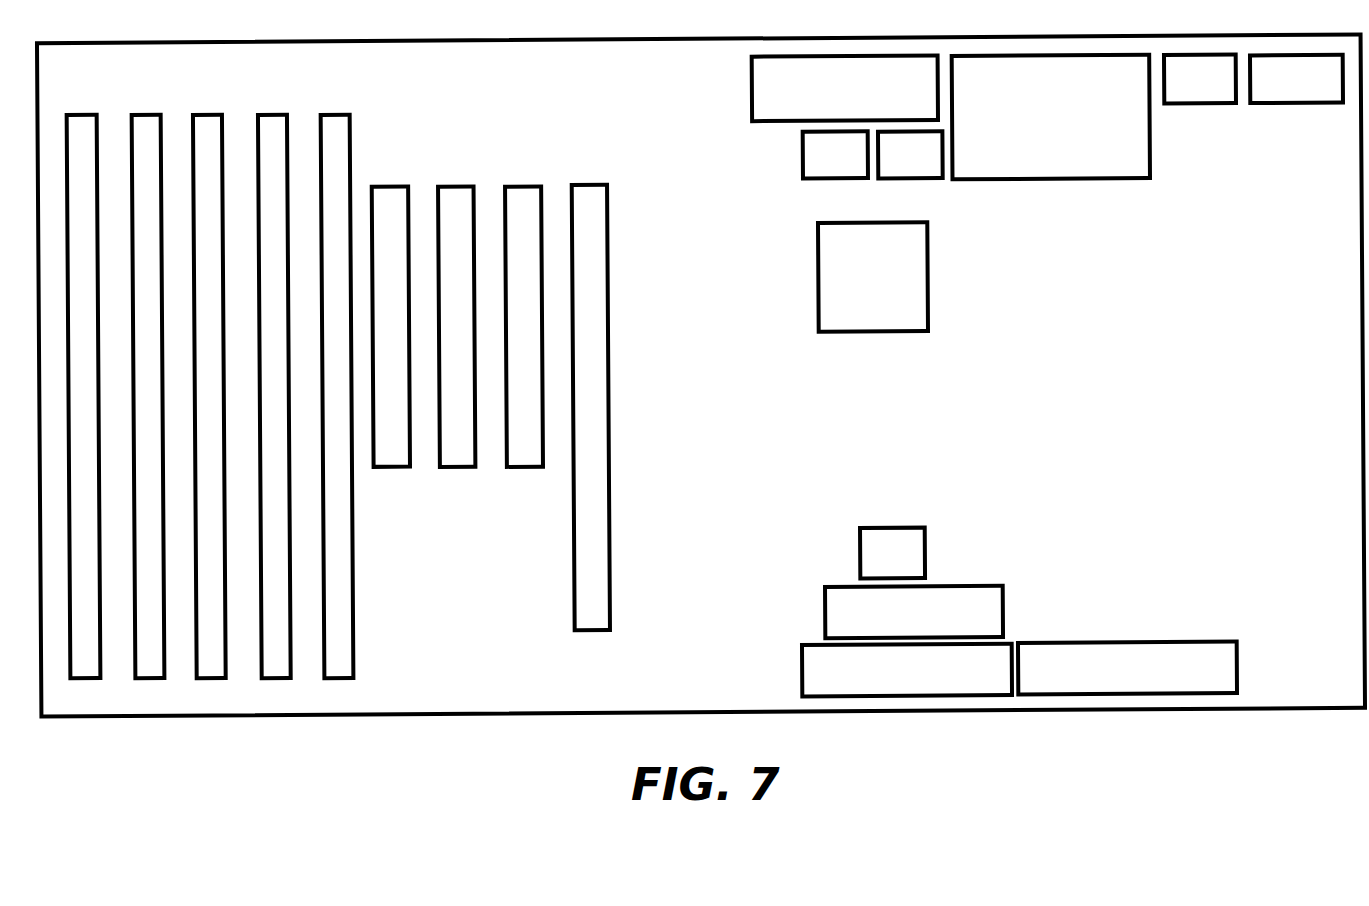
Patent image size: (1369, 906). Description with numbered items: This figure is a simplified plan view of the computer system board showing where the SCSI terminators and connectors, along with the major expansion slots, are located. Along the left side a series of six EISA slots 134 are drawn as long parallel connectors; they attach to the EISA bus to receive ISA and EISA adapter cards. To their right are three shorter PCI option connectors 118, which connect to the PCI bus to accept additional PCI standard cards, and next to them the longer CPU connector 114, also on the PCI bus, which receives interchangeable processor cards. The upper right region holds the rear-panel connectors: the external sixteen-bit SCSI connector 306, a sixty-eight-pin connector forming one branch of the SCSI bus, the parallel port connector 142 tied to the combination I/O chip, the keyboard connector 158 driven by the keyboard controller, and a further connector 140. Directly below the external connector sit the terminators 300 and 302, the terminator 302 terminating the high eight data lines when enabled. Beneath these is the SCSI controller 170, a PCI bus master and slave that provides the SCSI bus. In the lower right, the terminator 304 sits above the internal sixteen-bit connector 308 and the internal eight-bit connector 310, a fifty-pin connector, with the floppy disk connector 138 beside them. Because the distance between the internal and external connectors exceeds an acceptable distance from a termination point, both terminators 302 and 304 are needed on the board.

The EISA slots 134 is at (84, 109).
The PCI option connectors 118 is at (392, 468).
The CPU connector 114 is at (593, 630).
The external 16-bit connector 306 is at (754, 80).
The terminator 300 is at (804, 161).
The terminator 302 is at (923, 180).
The parallel port connector 142 is at (1088, 183).
The keyboard connector 158 is at (1182, 108).
The connector 140 is at (1280, 109).
The SCSI controller 170 is at (929, 270).
The terminator 304 is at (859, 539).
The internal 16-bit connector 308 is at (824, 598).
The internal 8-bit connector 310 is at (800, 658).
The floppy disk connector 138 is at (1235, 666).